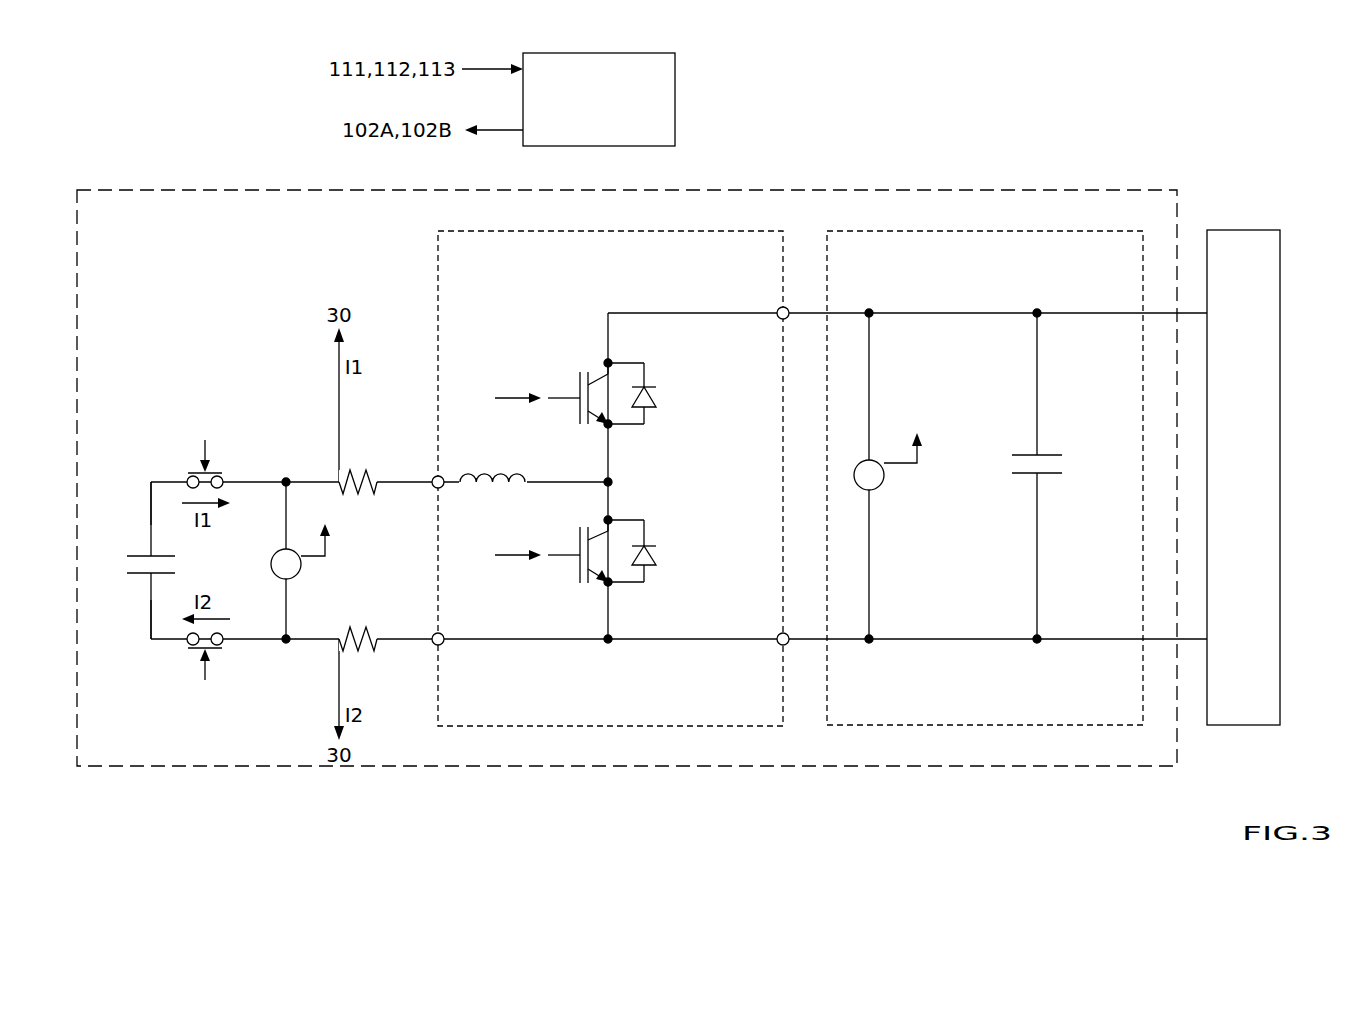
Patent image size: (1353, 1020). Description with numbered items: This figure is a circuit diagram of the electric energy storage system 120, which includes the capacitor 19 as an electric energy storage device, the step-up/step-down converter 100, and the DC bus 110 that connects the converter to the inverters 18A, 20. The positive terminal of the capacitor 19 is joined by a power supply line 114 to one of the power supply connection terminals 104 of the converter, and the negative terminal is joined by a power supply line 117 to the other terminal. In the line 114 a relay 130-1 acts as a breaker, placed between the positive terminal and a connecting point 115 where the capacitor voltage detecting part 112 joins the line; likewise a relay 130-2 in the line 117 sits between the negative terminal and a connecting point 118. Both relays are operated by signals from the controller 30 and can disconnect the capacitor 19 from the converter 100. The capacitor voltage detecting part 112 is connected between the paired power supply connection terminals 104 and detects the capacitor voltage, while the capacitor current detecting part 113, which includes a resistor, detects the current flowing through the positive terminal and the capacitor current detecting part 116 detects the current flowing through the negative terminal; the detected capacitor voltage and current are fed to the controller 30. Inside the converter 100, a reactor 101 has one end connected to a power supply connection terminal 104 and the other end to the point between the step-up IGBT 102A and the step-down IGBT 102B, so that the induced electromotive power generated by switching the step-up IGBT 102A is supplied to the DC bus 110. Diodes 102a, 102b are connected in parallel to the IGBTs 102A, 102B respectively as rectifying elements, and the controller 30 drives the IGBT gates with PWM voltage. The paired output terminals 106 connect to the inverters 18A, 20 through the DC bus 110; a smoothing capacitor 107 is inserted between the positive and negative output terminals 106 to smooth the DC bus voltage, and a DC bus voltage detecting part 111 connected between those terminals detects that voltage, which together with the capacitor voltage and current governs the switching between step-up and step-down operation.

The controller 30 is at (615, 53).
The electric energy storage system 120 is at (1085, 190).
The step-up/step-down converter 100 is at (690, 231).
The DC bus 110 is at (1117, 230).
The inverter 18A is at (1245, 230).
The inverter 20 is at (1243, 450).
The capacitor 19 is at (178, 562).
The power supply line 114 is at (149, 518).
The power supply line 117 is at (149, 607).
The relay 130-1 is at (190, 470).
The relay 130-2 is at (190, 652).
The connecting point 115 is at (285, 473).
The connecting point 118 is at (285, 650).
The capacitor voltage detecting part 112 is at (303, 562).
The capacitor current detecting part 113 is at (358, 470).
The capacitor current detecting part 116 is at (348, 650).
The power supply connection terminals 104 is at (433, 490).
The reactor 101 is at (497, 474).
The step-down IGBT 102B is at (582, 371).
The diode 102b is at (660, 392).
The step-up IGBT 102A is at (583, 586).
The diode 102a is at (660, 552).
The output terminals 106 is at (778, 306).
The DC bus voltage detecting part 111 is at (885, 473).
The smoothing capacitor 107 is at (1068, 468).